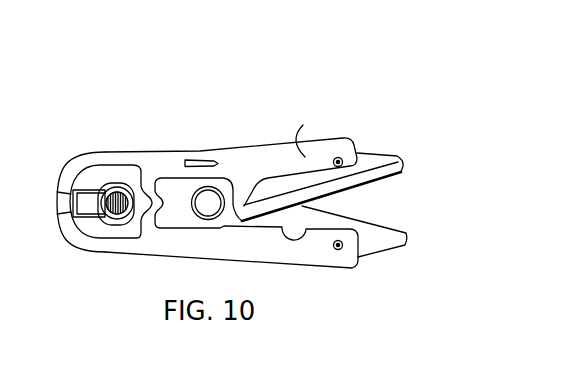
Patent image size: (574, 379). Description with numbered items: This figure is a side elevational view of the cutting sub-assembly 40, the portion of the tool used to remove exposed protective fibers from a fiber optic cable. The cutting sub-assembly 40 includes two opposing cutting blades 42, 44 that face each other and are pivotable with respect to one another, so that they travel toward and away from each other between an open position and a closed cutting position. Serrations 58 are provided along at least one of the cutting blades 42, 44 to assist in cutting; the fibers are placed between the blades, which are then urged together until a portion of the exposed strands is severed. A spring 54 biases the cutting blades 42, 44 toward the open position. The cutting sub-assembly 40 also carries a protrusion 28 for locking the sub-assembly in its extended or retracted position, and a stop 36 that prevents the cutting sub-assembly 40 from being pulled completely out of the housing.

The cutting sub-assembly 40 is at (273, 82).
The cutting blade 42 is at (370, 156).
The cutting blade 44 is at (398, 247).
The serrations 58 is at (374, 223).
The stop 36 is at (210, 197).
The protrusion 28 is at (107, 217).
The spring 54 is at (102, 180).